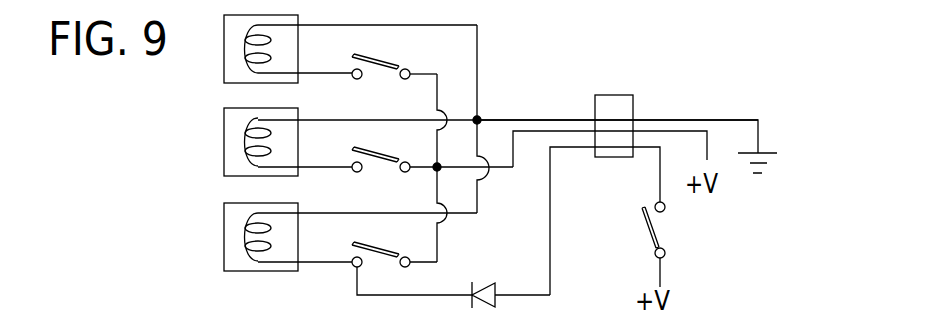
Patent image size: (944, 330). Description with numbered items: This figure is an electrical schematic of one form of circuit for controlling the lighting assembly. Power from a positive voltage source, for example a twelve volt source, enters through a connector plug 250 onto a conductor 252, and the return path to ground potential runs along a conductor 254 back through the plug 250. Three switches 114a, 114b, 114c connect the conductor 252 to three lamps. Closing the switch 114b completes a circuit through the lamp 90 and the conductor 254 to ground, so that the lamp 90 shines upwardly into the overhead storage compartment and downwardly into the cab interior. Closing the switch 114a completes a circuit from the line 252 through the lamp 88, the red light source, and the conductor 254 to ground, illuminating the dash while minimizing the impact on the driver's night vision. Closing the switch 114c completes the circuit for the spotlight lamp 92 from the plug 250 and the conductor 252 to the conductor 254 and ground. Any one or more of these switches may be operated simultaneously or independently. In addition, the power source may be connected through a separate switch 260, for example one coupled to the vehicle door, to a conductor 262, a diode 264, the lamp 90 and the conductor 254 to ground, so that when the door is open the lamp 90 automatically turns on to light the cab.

The lamp 88 is at (232, 50).
The lamp 90 is at (230, 138).
The lamp 92 is at (232, 230).
The switch 114a is at (385, 65).
The switch 114b is at (387, 157).
The switch 114c is at (380, 248).
The connector plug 250 is at (613, 95).
The conductor 252 is at (540, 128).
The conductor 254 is at (498, 118).
The switch 260 is at (645, 227).
The conductor 262 is at (552, 222).
The diode 264 is at (480, 283).